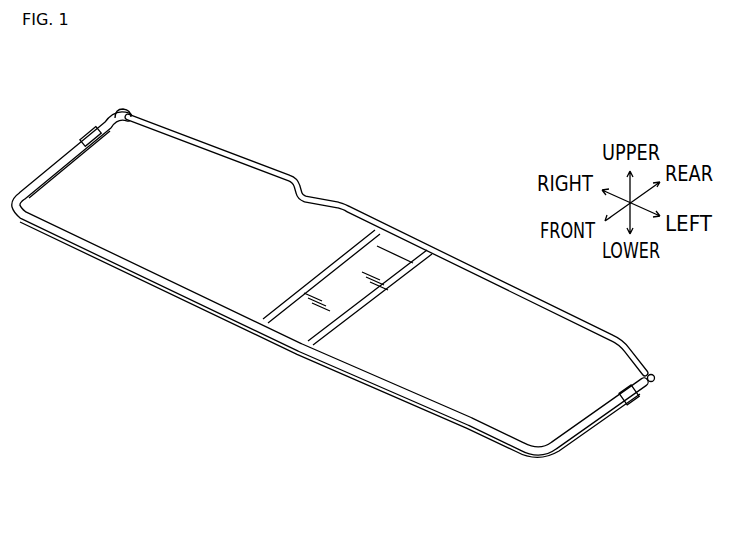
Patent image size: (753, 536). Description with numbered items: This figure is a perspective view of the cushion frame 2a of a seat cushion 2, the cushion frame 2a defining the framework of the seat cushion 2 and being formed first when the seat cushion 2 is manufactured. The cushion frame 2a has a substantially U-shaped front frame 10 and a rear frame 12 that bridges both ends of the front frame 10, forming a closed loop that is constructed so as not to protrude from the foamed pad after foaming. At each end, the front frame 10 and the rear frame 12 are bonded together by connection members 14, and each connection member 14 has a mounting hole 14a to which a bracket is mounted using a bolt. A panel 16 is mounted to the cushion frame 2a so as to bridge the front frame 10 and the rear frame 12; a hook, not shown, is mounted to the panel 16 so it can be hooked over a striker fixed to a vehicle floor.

The seat cushion 2 is at (368, 290).
The cushion frame 2a is at (330, 316).
The front frame 10 is at (418, 404).
The rear frame 12 is at (540, 304).
The connection member 14 is at (125, 103).
The mounting hole 14a is at (104, 120).
The panel 16 is at (300, 320).